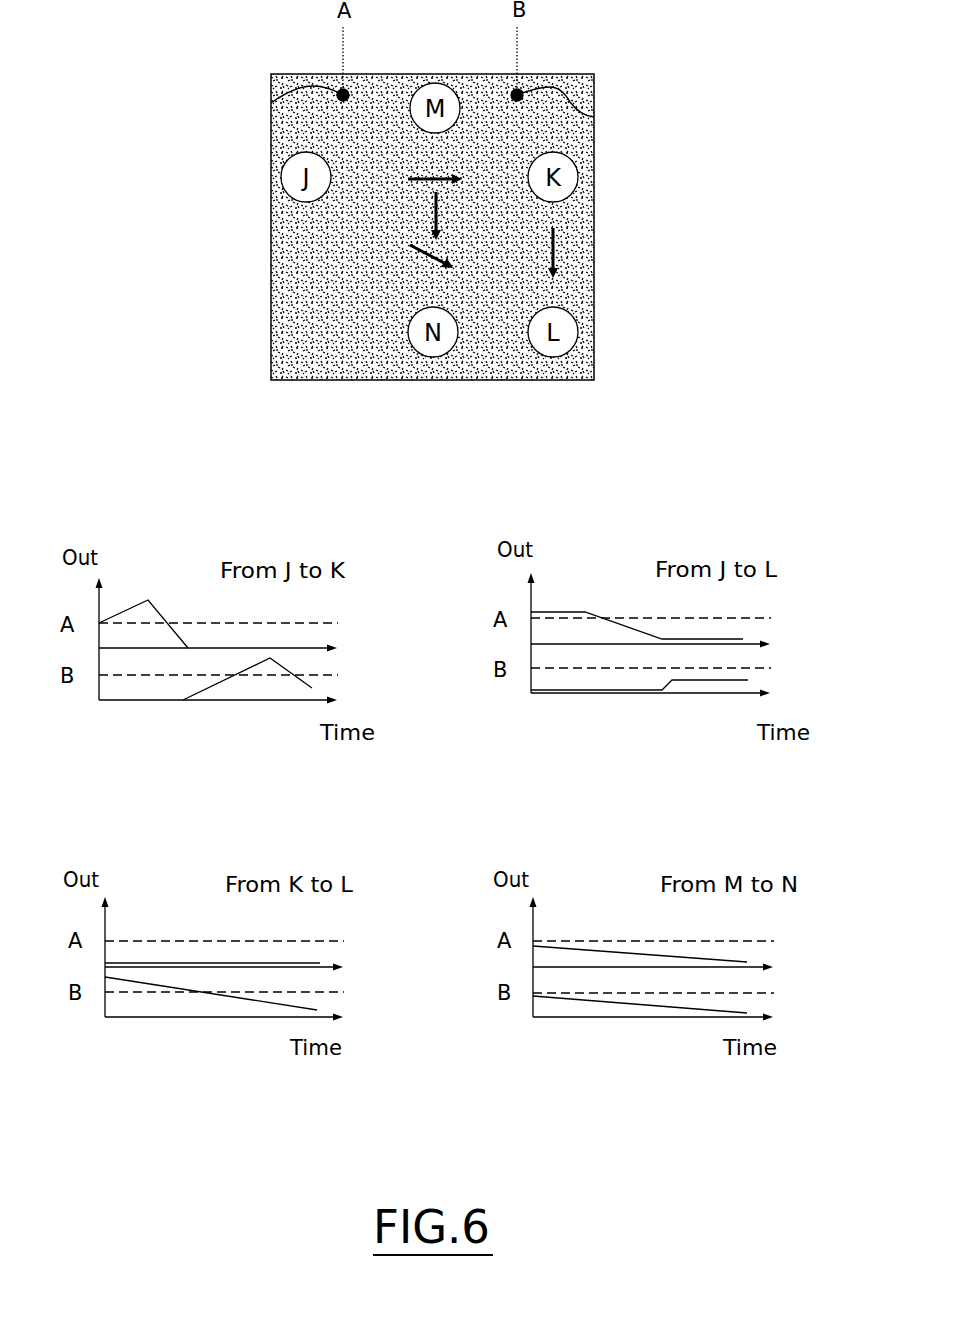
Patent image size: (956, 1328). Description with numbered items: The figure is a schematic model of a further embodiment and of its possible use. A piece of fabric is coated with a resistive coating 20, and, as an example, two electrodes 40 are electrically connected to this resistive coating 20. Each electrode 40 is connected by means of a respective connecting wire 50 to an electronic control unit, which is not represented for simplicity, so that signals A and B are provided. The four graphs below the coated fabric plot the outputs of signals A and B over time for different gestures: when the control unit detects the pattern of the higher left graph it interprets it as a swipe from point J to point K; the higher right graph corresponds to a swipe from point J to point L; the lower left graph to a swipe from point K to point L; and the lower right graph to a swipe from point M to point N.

The resistive coating 20 is at (480, 93).
The electrode 40 is at (271, 103).
The connecting wire 50 is at (343, 57).